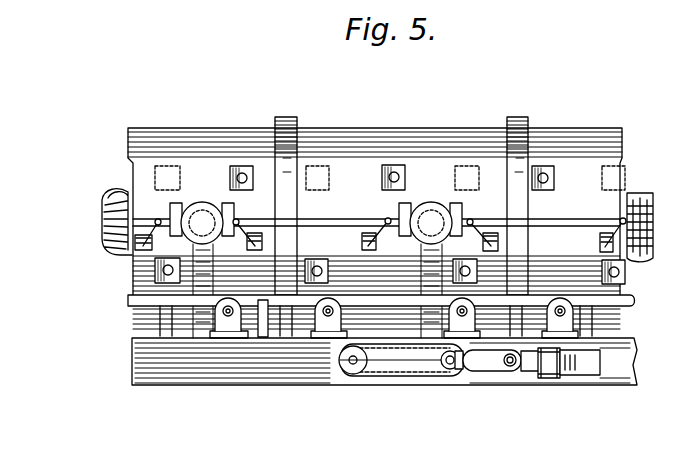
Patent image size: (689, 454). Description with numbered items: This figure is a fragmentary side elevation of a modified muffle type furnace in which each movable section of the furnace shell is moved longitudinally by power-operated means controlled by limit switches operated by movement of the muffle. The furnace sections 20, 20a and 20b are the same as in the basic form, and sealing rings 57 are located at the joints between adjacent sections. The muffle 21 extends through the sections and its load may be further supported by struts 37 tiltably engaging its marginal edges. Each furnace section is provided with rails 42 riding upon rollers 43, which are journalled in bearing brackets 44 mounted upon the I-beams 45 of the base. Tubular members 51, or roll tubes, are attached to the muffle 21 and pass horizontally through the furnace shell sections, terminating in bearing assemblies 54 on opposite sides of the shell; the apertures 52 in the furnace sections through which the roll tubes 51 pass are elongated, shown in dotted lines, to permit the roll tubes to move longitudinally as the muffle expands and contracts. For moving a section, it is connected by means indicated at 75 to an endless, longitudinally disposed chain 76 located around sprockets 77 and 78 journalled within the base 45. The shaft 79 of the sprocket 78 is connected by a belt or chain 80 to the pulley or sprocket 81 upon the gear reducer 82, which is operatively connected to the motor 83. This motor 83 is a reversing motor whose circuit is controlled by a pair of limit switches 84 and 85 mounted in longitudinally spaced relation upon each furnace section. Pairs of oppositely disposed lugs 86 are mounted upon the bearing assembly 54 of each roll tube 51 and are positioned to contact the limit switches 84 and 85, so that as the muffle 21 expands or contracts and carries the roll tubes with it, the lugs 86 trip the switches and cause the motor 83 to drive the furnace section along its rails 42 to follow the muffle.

The furnace section 20 is at (204, 126).
The furnace section 20a is at (371, 127).
The furnace section 20b is at (580, 127).
The muffle 21 is at (109, 252).
The strut 37 is at (263, 338).
The rail 42 is at (128, 299).
The roller 43 is at (323, 333).
The bearing bracket 44 is at (226, 338).
The I-beam 45 is at (252, 375).
The tubular member 51 is at (199, 208).
The aperture 52 is at (186, 241).
The bearing assembly 54 is at (197, 206).
The sealing ring 57 is at (291, 114).
The connecting means 75 is at (146, 327).
The chain 76 is at (417, 378).
The sprocket 77 is at (353, 376).
The sprocket 78 is at (450, 372).
The shaft 79 is at (463, 372).
The belt or chain 80 is at (500, 373).
The pulley or sprocket 81 is at (527, 374).
The gear reducer 82 is at (552, 378).
The motor 83 is at (577, 372).
The limit switch 84 is at (156, 220).
The limit switch 85 is at (266, 223).
The lug 86 is at (177, 206).